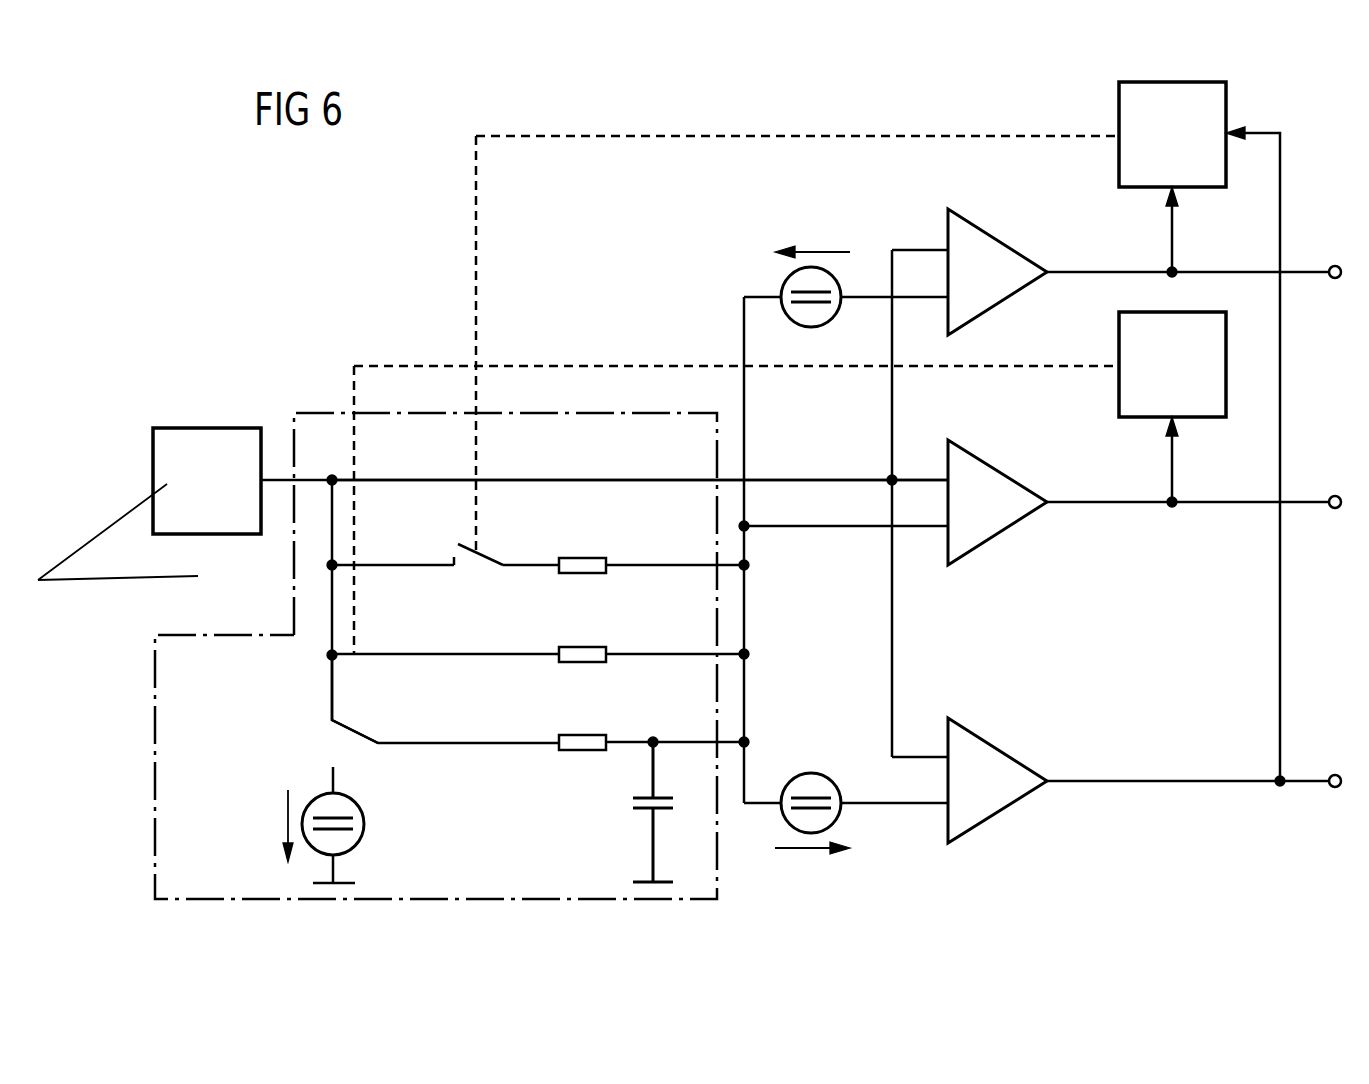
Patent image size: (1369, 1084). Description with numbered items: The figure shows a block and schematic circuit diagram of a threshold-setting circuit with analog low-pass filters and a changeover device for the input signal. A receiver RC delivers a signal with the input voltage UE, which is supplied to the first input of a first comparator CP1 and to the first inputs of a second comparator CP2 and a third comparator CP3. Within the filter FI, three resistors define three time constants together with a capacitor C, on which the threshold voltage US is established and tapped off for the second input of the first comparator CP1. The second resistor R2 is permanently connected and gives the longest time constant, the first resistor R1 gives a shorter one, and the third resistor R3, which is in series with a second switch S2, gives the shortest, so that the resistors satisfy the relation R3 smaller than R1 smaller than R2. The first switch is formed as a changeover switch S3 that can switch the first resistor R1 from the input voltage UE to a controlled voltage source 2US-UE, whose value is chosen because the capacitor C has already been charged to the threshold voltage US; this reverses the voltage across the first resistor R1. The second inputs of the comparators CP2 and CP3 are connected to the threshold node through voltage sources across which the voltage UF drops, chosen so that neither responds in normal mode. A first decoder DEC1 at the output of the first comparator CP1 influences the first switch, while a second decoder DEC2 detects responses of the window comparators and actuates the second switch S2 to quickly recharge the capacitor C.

The receiver RC is at (207, 428).
The filter FI is at (222, 635).
The second switch S2 is at (485, 557).
The changeover switch S3 is at (363, 733).
The first resistor R1 is at (583, 735).
The second resistor R2 is at (585, 647).
The third resistor R3 is at (585, 558).
The capacitor C is at (640, 808).
The first comparator CP1 is at (998, 468).
The second comparator CP2 is at (998, 238).
The third comparator CP3 is at (998, 745).
The first decoder DEC1 is at (1172, 409).
The second decoder DEC2 is at (1202, 434).
The voltage source offset voltage UF is at (846, 552).
The input voltage UE is at (812, 478).
The threshold voltage US is at (818, 528).
The controlled voltage source 2US-UE is at (275, 825).